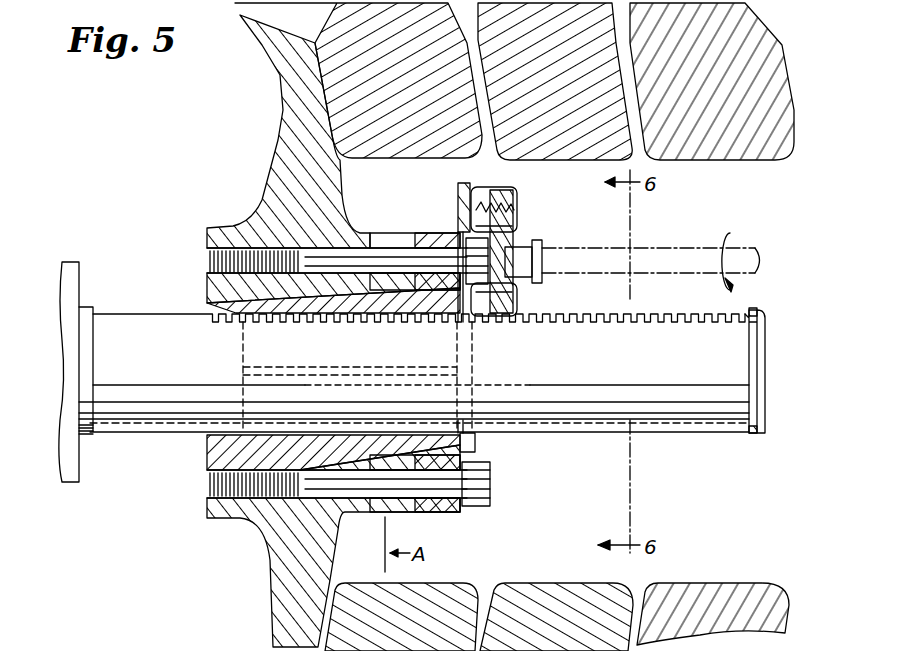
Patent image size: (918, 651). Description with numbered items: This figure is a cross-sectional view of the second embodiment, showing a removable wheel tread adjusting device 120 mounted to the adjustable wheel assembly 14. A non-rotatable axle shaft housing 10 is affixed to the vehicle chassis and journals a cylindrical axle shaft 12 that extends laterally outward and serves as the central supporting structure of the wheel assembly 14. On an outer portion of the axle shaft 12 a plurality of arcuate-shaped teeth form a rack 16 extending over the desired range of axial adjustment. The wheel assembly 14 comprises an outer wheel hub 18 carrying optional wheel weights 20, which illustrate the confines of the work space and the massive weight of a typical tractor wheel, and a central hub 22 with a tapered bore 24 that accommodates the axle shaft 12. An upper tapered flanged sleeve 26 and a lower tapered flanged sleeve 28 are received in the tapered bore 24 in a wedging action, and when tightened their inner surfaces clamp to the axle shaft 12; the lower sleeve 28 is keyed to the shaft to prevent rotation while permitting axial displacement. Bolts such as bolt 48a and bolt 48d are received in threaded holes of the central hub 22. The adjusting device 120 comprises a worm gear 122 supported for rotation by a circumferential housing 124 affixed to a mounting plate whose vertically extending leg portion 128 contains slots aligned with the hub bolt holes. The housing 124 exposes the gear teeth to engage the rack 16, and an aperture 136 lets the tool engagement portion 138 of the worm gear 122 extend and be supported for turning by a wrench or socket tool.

The axle shaft housing 10 is at (80, 262).
The axle shaft 12 is at (470, 182).
The adjustable wheel assembly 14 is at (217, 153).
The rack 16 is at (725, 315).
The outer wheel hub 18 is at (280, 108).
The wheel weights 20 is at (411, 84).
The central hub 22 is at (230, 222).
The tapered bore 24 is at (217, 333).
The upper tapered flanged sleeve 26 is at (448, 228).
The lower tapered flanged sleeve 28 is at (450, 513).
The bolt 48a is at (372, 232).
The bolt 48d is at (487, 485).
The removable wheel tread adjusting device 120 is at (597, 227).
The worm gear 122 is at (493, 187).
The circumferential housing 124 is at (517, 203).
The leg portion 128 is at (473, 442).
The aperture 136 is at (515, 223).
The tool engagement portion 138 is at (520, 288).